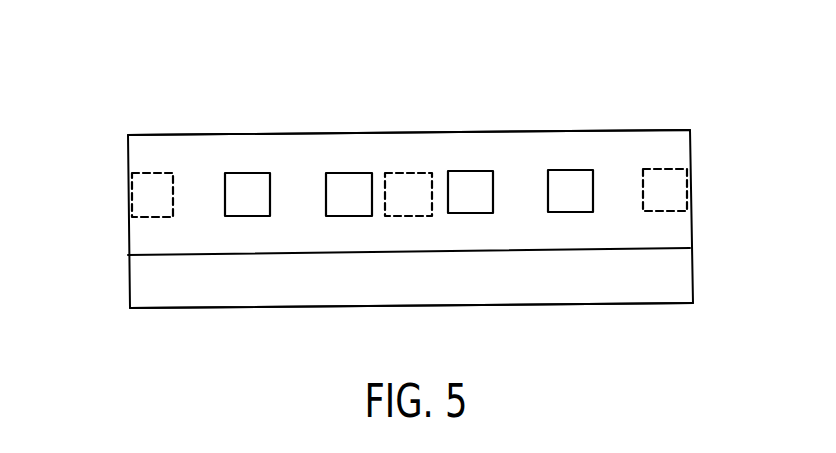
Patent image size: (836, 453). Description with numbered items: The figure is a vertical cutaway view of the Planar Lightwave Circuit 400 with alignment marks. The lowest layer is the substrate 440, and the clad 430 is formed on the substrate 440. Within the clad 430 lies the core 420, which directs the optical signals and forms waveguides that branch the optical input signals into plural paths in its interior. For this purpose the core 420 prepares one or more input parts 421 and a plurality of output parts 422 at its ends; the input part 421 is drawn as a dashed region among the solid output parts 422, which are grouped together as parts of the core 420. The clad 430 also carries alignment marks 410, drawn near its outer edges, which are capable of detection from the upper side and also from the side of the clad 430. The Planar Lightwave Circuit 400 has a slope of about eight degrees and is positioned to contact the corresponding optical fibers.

The Planar Lightwave Circuit 400 is at (702, 141).
The alignment marks 410 is at (131, 200).
The core 420 is at (543, 56).
The input part 421 is at (398, 173).
The output parts 422 is at (343, 173).
The clad 430 is at (137, 160).
The substrate 440 is at (137, 285).